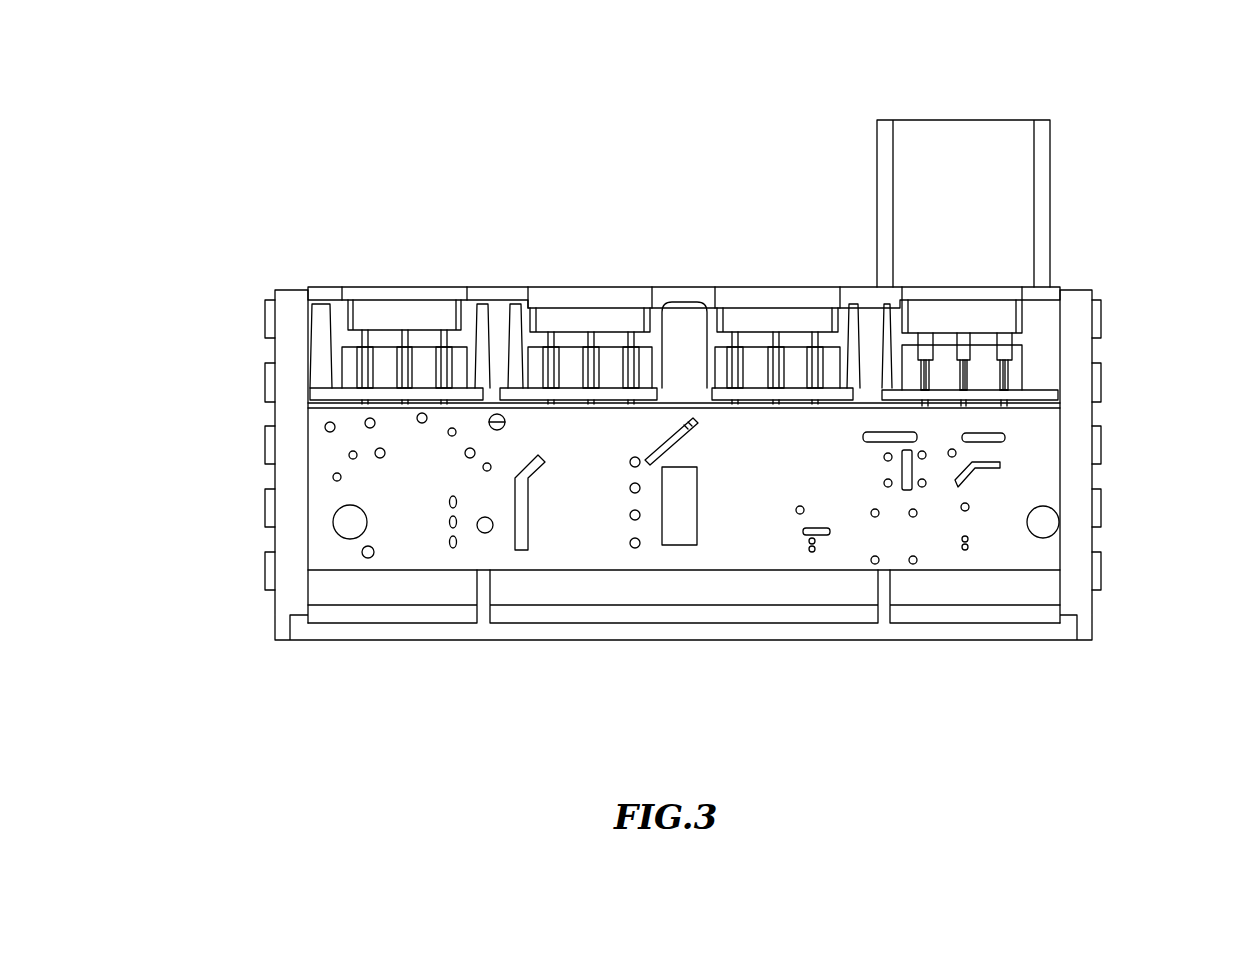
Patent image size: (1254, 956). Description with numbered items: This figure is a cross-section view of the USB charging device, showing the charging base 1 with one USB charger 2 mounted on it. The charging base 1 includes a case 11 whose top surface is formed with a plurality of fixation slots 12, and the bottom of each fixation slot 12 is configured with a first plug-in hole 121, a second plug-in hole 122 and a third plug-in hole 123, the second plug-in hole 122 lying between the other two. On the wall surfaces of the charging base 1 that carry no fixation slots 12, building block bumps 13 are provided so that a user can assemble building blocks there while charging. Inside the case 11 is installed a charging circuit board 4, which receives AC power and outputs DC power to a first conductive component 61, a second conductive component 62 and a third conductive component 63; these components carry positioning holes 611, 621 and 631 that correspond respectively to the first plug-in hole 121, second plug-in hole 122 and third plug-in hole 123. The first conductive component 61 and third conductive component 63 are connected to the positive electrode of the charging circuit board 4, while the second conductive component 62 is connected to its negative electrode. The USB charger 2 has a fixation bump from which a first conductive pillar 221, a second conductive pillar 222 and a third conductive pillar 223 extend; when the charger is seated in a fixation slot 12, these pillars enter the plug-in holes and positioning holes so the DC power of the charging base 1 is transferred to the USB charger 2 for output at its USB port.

The charging base 1 is at (272, 477).
The case 11 is at (288, 290).
The fixation slot 12 is at (551, 254).
The first plug-in hole 121 is at (628, 337).
The second plug-in hole 122 is at (590, 338).
The third plug-in hole 123 is at (553, 338).
The building block bump 13 is at (267, 442).
The USB charger 2 is at (1008, 120).
The first conductive pillar 221 is at (1002, 337).
The second conductive pillar 222 is at (963, 337).
The third conductive pillar 223 is at (923, 337).
The charging circuit board 4 is at (587, 543).
The first conductive component 61 is at (1005, 370).
The positioning hole 611 is at (1002, 388).
The second conductive component 62 is at (968, 378).
The positioning hole 621 is at (972, 382).
The third conductive component 63 is at (927, 378).
The positioning hole 631 is at (918, 365).